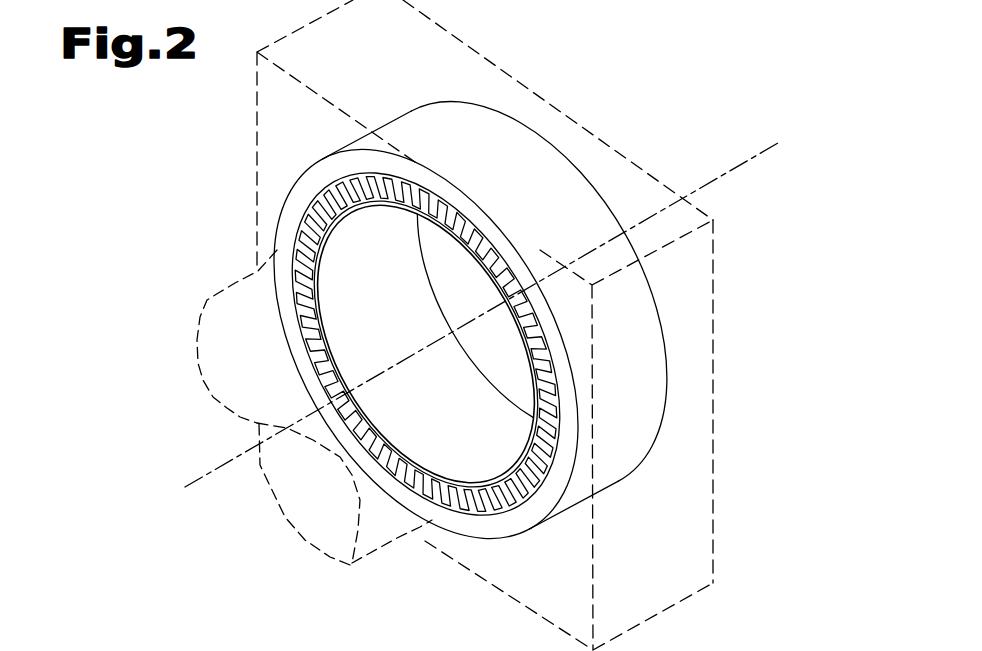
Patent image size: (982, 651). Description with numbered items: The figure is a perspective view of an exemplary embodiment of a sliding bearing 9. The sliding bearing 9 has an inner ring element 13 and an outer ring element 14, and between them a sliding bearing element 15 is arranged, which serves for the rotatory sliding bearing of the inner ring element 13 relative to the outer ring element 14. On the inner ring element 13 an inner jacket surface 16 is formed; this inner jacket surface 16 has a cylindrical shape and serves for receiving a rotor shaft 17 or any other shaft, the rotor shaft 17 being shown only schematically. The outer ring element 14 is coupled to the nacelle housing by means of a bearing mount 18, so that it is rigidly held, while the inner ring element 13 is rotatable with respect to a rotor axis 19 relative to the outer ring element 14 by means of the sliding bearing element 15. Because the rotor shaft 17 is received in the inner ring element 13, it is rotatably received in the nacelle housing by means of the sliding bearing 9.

The sliding bearing 9 is at (598, 113).
The inner ring element 13 is at (397, 314).
The outer ring element 14 is at (507, 135).
The sliding bearing element 15 is at (313, 197).
The inner jacket surface 16 is at (452, 425).
The rotor shaft 17 is at (232, 300).
The bearing mount 18 is at (693, 277).
The rotor axis 19 is at (757, 152).